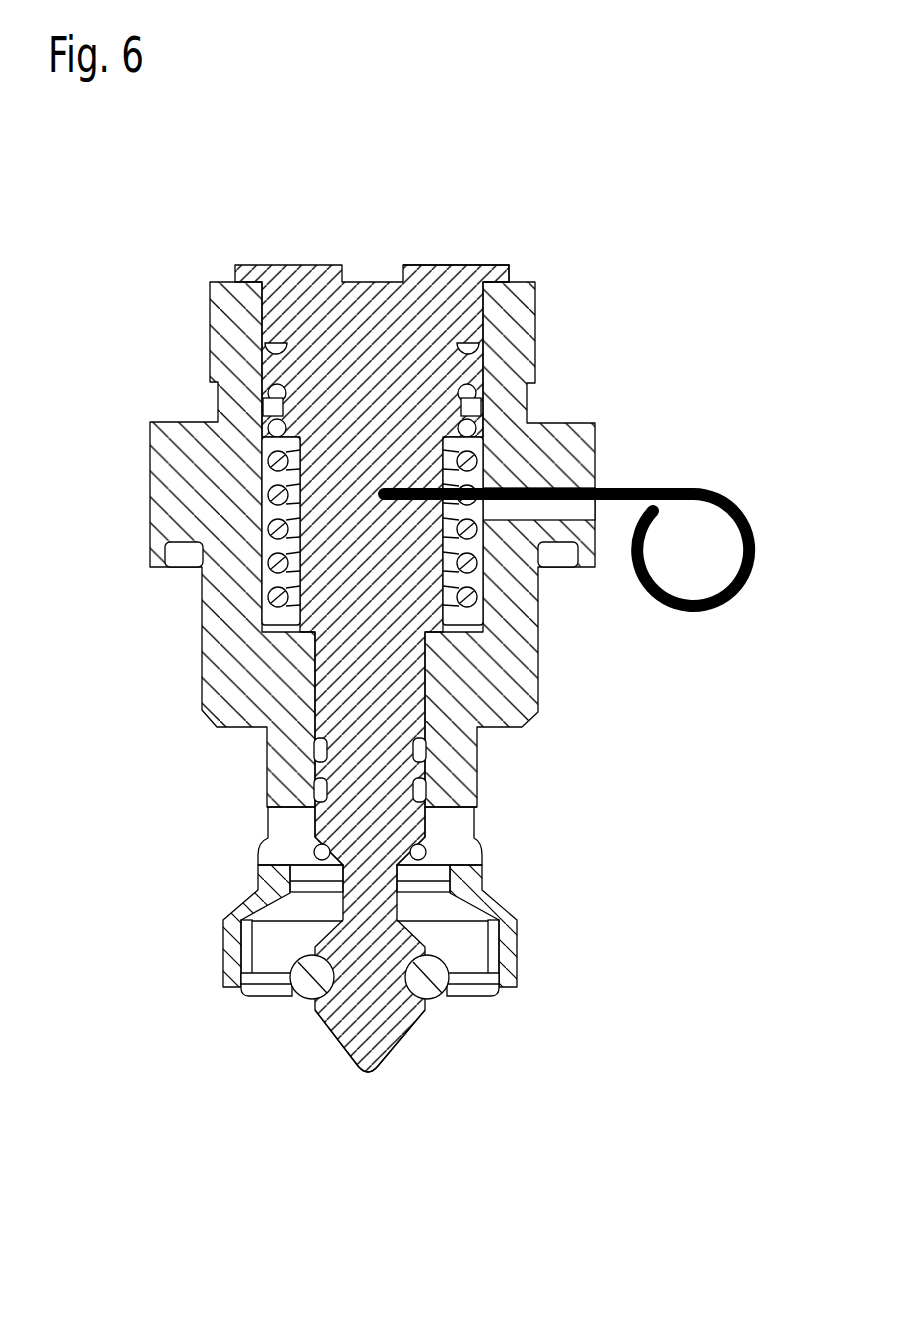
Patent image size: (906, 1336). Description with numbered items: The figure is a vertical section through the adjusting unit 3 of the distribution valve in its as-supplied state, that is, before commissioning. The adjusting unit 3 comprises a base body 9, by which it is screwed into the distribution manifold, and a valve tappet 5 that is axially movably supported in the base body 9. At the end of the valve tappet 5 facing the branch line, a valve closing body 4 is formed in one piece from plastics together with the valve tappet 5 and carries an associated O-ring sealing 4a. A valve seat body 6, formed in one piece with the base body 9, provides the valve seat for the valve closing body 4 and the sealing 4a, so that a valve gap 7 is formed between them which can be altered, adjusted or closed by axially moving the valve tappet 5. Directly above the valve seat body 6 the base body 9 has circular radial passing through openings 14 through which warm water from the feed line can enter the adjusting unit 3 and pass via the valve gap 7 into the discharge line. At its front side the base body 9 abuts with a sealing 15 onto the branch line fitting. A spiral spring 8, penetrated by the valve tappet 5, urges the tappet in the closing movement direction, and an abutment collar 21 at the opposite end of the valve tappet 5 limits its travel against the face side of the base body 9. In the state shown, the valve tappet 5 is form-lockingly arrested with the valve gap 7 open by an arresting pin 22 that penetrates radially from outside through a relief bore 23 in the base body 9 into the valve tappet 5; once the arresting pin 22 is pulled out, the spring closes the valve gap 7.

The adjusting unit 3 is at (120, 340).
The valve closing body 4 is at (358, 1013).
The O-ring sealing 4a is at (416, 980).
The valve tappet 5 is at (435, 305).
The valve seat body 6 is at (273, 890).
The valve gap 7 is at (455, 935).
The spiral spring 8 is at (278, 560).
The base body 9 is at (248, 692).
The radial passing through openings 14 is at (420, 853).
The sealing 15 is at (252, 990).
The abutment collar 21 is at (516, 269).
The arresting pin 22 is at (699, 484).
The relief bore 23 is at (567, 505).